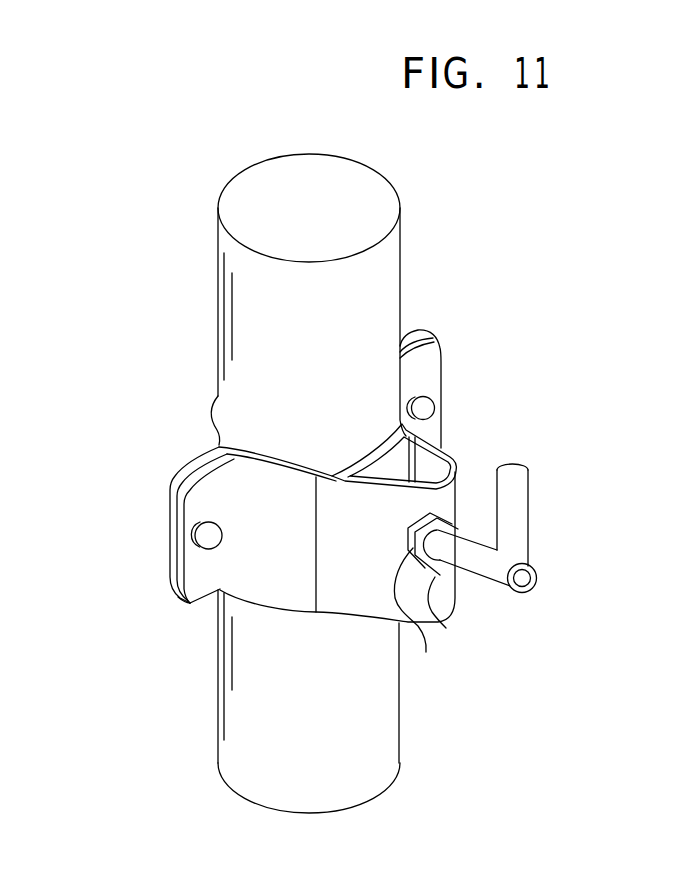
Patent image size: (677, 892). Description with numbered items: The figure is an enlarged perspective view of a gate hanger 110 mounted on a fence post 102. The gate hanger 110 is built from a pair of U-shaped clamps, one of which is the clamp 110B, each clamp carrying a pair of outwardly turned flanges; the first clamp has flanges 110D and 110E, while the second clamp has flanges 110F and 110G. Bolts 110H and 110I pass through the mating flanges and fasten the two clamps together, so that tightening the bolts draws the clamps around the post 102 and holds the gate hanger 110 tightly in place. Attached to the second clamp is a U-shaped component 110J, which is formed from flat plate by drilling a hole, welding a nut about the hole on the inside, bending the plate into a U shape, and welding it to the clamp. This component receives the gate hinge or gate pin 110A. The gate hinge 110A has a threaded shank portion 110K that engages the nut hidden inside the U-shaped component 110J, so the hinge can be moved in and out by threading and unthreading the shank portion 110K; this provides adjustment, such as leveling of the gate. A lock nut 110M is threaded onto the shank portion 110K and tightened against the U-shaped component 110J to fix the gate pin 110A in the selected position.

The post 102 is at (237, 172).
The gate hanger 110 is at (589, 314).
The gate hinge 110A is at (530, 495).
The U-shaped clamp 110B is at (214, 396).
The flange 110D is at (148, 556).
The flange 110E is at (415, 334).
The flange 110F is at (192, 606).
The flange 110G is at (480, 384).
The bolt 110H is at (203, 543).
The bolt 110I is at (436, 407).
The U-shaped component 110J is at (446, 628).
The shank portion 110K is at (498, 582).
The lock nut 110M is at (426, 652).